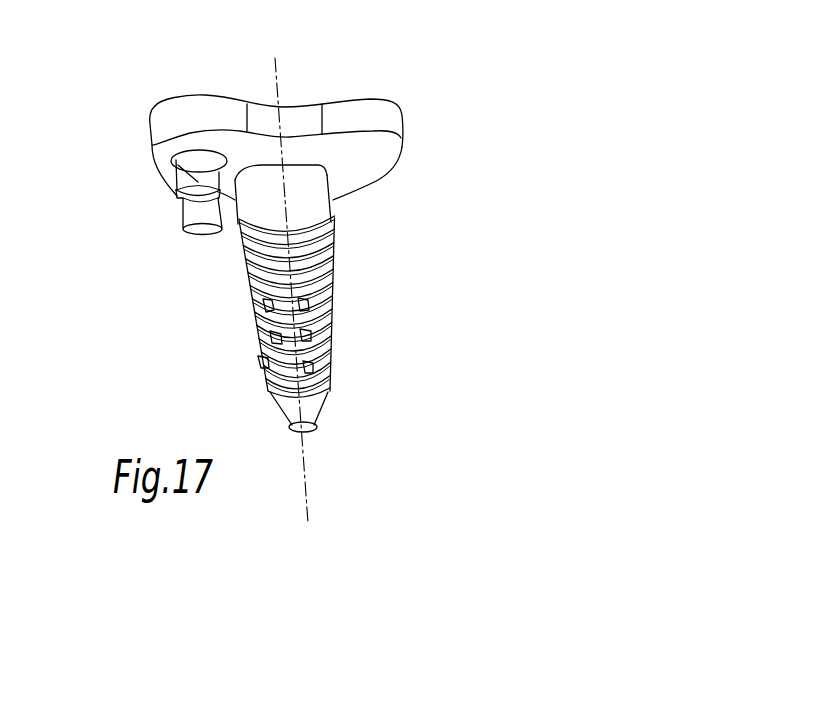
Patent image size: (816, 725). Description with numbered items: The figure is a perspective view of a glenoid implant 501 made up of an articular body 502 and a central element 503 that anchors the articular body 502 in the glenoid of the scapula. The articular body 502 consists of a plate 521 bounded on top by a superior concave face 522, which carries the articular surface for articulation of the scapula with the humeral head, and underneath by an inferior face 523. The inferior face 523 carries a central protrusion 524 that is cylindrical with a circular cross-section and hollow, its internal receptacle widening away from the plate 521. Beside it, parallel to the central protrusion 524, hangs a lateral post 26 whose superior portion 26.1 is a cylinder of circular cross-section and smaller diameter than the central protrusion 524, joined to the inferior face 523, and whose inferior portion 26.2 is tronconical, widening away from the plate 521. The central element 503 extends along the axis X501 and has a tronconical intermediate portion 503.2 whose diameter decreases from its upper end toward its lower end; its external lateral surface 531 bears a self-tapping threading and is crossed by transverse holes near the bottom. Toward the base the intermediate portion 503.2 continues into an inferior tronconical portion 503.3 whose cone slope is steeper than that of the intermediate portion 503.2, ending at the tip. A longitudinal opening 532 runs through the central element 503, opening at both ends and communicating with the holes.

The longitudinal axis X501 is at (278, 279).
The glenoid implant 501 is at (311, 249).
The articular body 502 is at (287, 144).
The central element 503 is at (333, 348).
The plate 521 is at (328, 125).
The superior concave face 522 is at (338, 94).
The inferior face 523 is at (351, 161).
The central protrusion 524 is at (322, 208).
The lateral post 26 is at (133, 192).
The superior portion 26.1 is at (173, 162).
The inferior portion 26.2 is at (183, 221).
The intermediate portion 503.2 is at (243, 266).
The inferior tronconical portion 503.3 is at (293, 436).
The external lateral surface 531 is at (344, 318).
The longitudinal opening 532 is at (314, 434).